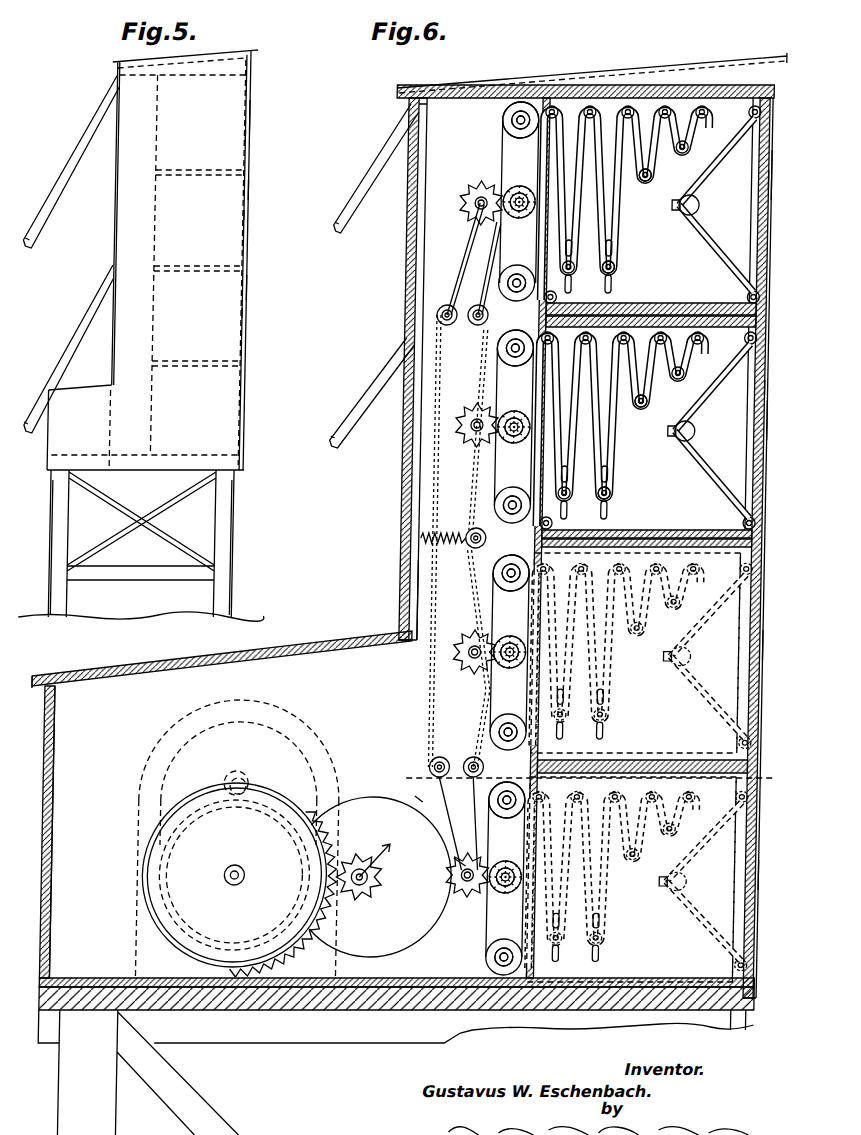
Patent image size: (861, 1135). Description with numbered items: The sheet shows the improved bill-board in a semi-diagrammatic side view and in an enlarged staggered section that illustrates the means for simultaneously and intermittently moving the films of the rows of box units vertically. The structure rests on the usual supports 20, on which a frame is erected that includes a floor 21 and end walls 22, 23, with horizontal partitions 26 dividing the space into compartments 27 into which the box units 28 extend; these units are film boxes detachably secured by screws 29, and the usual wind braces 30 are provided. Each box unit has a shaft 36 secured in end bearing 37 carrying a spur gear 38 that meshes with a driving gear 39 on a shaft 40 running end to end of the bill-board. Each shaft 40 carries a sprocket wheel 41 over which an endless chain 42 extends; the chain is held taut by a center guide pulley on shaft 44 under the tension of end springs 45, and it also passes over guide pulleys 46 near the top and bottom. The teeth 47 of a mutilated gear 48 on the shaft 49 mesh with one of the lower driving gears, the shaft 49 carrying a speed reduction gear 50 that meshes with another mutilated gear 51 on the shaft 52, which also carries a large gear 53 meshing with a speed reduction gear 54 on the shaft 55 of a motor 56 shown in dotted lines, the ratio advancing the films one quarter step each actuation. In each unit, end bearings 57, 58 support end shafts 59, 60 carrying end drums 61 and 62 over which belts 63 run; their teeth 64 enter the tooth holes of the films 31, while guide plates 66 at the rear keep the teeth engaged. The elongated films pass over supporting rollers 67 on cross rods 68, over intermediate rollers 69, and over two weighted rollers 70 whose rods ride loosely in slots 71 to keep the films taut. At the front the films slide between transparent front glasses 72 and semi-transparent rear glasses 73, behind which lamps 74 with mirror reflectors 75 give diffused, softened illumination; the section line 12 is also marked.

In FIG. 6, the section line 12 is at (433, 784).
In FIG. 5, the supports 20 is at (60, 538).
In FIG. 6, the supports 20 is at (79, 1092).
In FIG. 5, the floor 21 is at (176, 462).
In FIG. 6, the floor 21 is at (628, 1012).
In FIG. 5, the end wall 22 is at (156, 228).
In FIG. 6, the end wall 23 is at (443, 600).
In FIG. 6, the horizontal partitions 26 is at (668, 86).
In FIG. 6, the compartments 27 is at (700, 95).
In FIG. 5, the box units 28 is at (252, 128).
In FIG. 6, the box units 28 is at (732, 92).
In FIG. 5, the screws 29 is at (258, 138).
In FIG. 6, the screws 29 is at (778, 192).
In FIG. 5, the wind braces 30 is at (73, 165).
In FIG. 6, the wind braces 30 is at (376, 183).
In FIG. 6, the films 31 is at (772, 152).
In FIG. 6, the shaft 36 is at (504, 553).
In FIG. 6, the end bearing 37 is at (526, 418).
In FIG. 6, the spur gears 38 is at (512, 462).
In FIG. 6, the driving gears 39 is at (464, 543).
In FIG. 6, the shafts 40 is at (480, 215).
In FIG. 6, the sprocket wheel 41 is at (474, 856).
In FIG. 6, the endless chain 42 is at (458, 232).
In FIG. 6, the shaft 44 is at (487, 532).
In FIG. 6, the end springs 45 is at (450, 533).
In FIG. 6, the guide pulleys 46 is at (455, 326).
In FIG. 6, the teeth 47 is at (417, 805).
In FIG. 6, the mutilated gear 48 is at (381, 877).
In FIG. 6, the shaft 49 is at (381, 853).
In FIG. 6, the speed reduction gear 50 is at (378, 900).
In FIG. 6, the mutilated gear 51 is at (302, 946).
In FIG. 6, the shaft 52 is at (251, 885).
In FIG. 6, the large gear 53 is at (162, 840).
In FIG. 6, the speed reduction gear 54 is at (240, 779).
In FIG. 6, the shaft 55 is at (257, 782).
In FIG. 6, the motor 56 is at (312, 720).
In FIG. 6, the end bearing 57 is at (514, 468).
In FIG. 6, the end bearing 58 is at (513, 612).
In FIG. 6, the end shaft 59 is at (518, 128).
In FIG. 6, the end shaft 60 is at (520, 275).
In FIG. 6, the end drum 61 is at (516, 122).
In FIG. 6, the end drum 62 is at (513, 284).
In FIG. 6, the belts 63 is at (506, 122).
In FIG. 6, the teeth 64 is at (503, 120).
In FIG. 6, the guide plates 66 is at (548, 200).
In FIG. 6, the supporting rollers 67 is at (750, 112).
In FIG. 6, the cross rods 68 is at (756, 292).
In FIG. 6, the intermediate rollers 69 is at (648, 182).
In FIG. 6, the weighted rollers 70 is at (621, 267).
In FIG. 6, the slots 71 is at (628, 290).
In FIG. 6, the front glasses 72 is at (774, 180).
In FIG. 6, the rear glasses 73 is at (722, 170).
In FIG. 6, the lamps 74 is at (703, 203).
In FIG. 6, the reflectors 75 is at (712, 245).